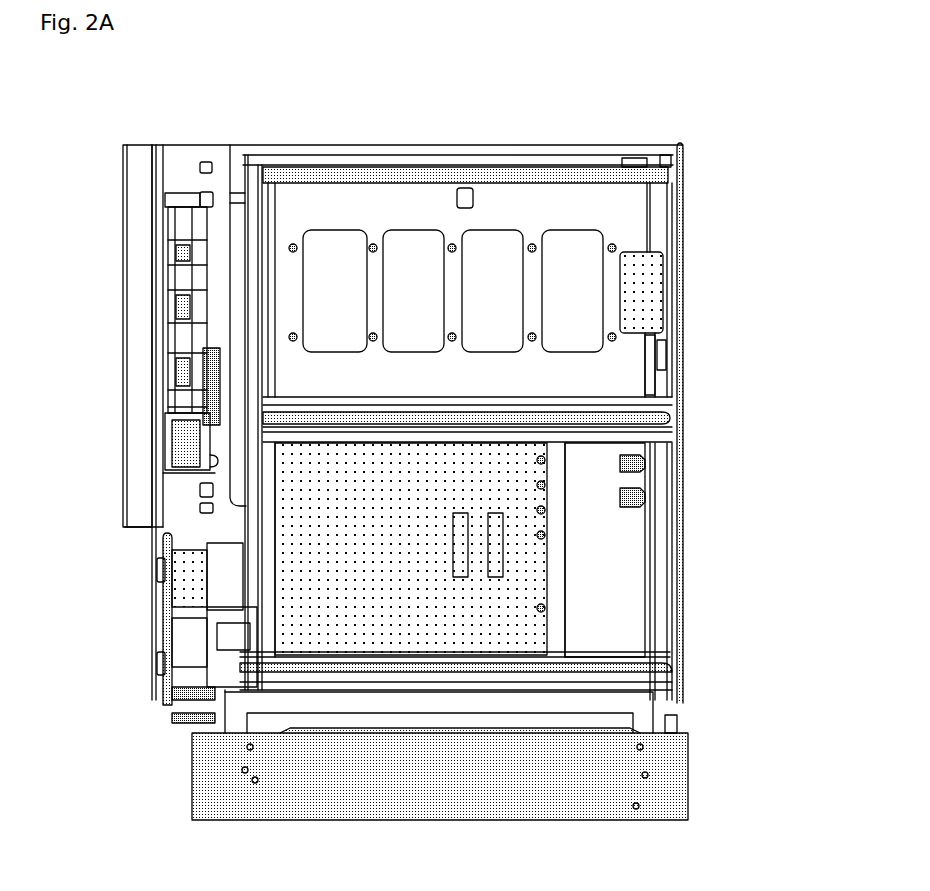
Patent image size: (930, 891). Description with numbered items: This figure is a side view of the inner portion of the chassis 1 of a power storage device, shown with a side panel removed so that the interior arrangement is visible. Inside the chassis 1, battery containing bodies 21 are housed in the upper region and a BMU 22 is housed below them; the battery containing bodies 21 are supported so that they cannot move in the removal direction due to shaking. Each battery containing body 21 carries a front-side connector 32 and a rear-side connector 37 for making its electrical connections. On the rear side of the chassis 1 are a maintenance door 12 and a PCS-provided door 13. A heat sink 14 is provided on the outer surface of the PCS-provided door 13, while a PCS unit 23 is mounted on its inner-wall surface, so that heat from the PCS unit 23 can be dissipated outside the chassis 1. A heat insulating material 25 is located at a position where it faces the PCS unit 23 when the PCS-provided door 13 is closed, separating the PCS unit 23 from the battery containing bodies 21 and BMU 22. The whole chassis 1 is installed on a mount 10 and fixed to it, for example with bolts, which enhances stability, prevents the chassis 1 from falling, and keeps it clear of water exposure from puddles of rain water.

The chassis 1 is at (452, 437).
The mount 10 is at (493, 774).
The maintenance door 12 is at (174, 625).
The PCS-provided door 13 is at (417, 386).
The heat sink 14 is at (155, 297).
The battery containing body 21 is at (534, 270).
The BMU 22 is at (523, 577).
The PCS unit 23 is at (219, 269).
The heat insulating material 25 is at (283, 382).
The front-side connector 32 is at (702, 351).
The rear-side connector 37 is at (454, 400).